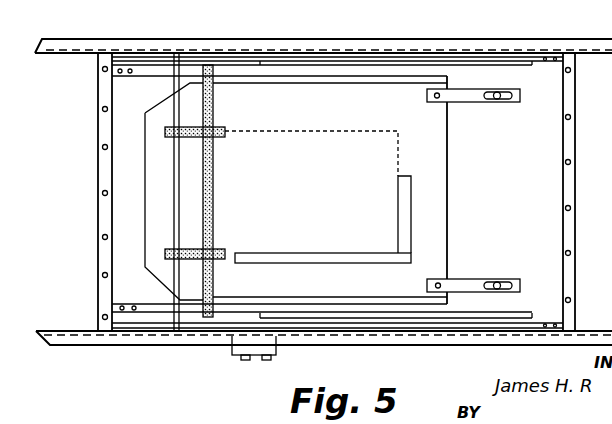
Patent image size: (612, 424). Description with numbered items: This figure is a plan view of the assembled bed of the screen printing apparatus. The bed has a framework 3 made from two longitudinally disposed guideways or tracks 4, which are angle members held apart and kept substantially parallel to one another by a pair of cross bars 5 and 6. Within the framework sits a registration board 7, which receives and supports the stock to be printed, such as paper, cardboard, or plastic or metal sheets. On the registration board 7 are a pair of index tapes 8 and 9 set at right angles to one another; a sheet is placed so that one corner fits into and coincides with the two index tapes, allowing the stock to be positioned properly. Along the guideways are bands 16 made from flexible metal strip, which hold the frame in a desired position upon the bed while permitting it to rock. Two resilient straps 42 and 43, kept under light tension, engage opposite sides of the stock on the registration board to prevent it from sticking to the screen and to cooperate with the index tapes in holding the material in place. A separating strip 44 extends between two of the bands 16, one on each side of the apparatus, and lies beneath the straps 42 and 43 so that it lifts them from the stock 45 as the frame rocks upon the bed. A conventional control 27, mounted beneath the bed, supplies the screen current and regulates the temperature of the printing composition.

The framework 3 is at (577, 82).
The guideways 4 is at (527, 39).
The cross bar 5 is at (575, 147).
The cross bar 6 is at (99, 181).
The registration board 7 is at (447, 237).
The index tape 8 is at (355, 258).
The index tape 9 is at (411, 218).
The bands 16 is at (533, 64).
The control 27 is at (232, 352).
The strap 42 is at (165, 132).
The strap 43 is at (165, 254).
The separating strip 44 is at (213, 100).
The stock 45 is at (402, 145).